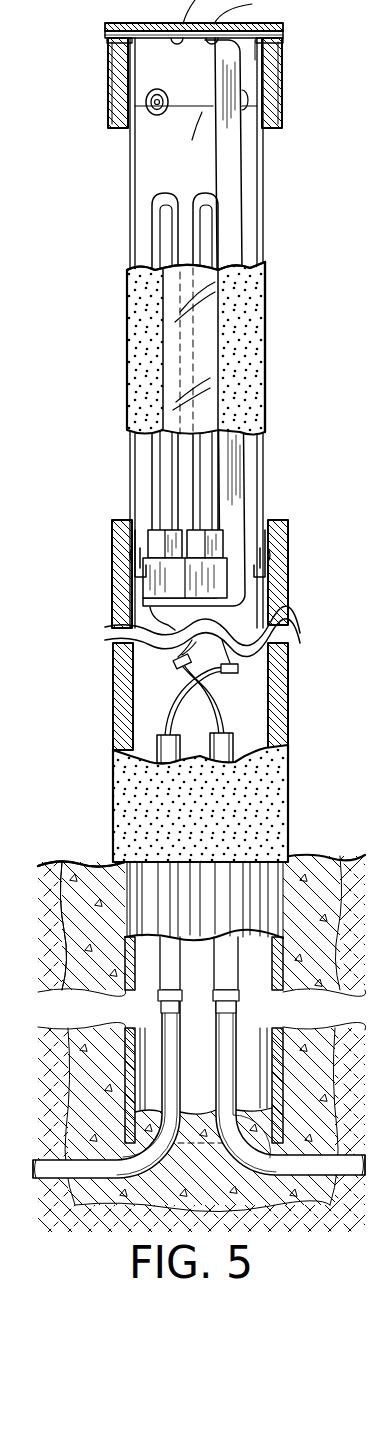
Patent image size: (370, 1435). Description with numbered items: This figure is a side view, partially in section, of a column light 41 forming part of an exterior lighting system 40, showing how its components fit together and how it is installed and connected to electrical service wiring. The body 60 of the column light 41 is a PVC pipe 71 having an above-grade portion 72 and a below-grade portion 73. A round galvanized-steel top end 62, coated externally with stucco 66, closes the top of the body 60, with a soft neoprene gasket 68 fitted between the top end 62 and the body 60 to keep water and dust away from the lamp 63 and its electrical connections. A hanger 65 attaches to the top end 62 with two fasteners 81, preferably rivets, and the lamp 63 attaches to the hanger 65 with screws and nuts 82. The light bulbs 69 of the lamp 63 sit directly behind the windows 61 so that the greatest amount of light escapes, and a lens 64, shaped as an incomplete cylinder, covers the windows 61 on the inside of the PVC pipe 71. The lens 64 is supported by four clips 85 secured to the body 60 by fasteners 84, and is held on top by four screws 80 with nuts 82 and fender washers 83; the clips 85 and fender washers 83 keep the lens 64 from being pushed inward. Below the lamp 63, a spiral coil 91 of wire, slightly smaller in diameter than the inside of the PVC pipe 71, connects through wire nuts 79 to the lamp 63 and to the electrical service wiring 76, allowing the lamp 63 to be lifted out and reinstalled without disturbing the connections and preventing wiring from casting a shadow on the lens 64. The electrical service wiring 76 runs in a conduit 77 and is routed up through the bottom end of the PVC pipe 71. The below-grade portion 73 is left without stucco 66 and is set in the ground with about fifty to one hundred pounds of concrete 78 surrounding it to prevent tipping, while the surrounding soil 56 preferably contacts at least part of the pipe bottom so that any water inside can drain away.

The exterior lighting system 40 is at (283, 333).
The column light 41 is at (278, 287).
The soil 56 is at (48, 862).
The body 60 is at (108, 78).
The windows 61 is at (127, 345).
The top end 62 is at (283, 31).
The lamp 63 is at (155, 528).
The lens 64 is at (130, 243).
The hanger 65 is at (246, 163).
The stucco 66 is at (283, 108).
The gasket 68 is at (283, 46).
The light bulbs 69 is at (150, 198).
The PVC pipe 71 is at (124, 130).
The above-grade portion 72 is at (113, 766).
The below-grade portion 73 is at (80, 862).
The electrical service wiring 76 is at (285, 709).
The conduit 77 is at (233, 741).
The concrete 78 is at (322, 856).
The wire nuts 79 is at (284, 659).
The screws 80 is at (168, 92).
The fasteners 81 is at (233, 12).
The nuts 82 is at (168, 122).
The fender washers 83 is at (150, 91).
The fasteners 84 is at (276, 570).
The clips 85 is at (266, 556).
The coil 91 is at (268, 630).